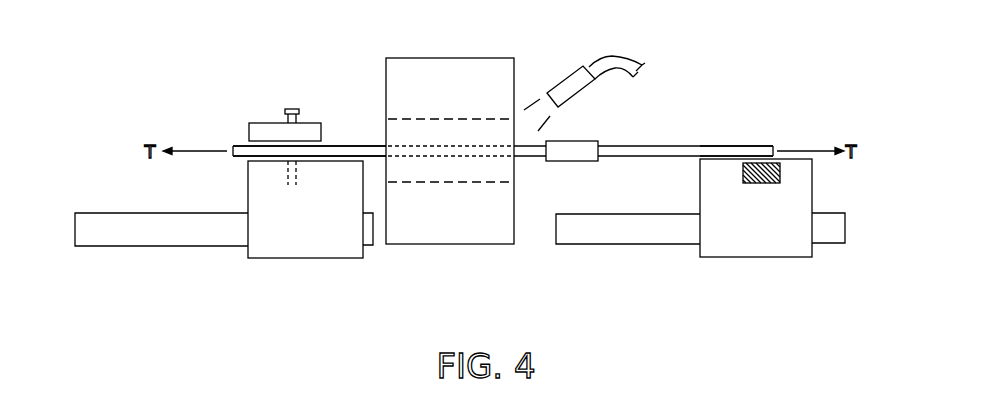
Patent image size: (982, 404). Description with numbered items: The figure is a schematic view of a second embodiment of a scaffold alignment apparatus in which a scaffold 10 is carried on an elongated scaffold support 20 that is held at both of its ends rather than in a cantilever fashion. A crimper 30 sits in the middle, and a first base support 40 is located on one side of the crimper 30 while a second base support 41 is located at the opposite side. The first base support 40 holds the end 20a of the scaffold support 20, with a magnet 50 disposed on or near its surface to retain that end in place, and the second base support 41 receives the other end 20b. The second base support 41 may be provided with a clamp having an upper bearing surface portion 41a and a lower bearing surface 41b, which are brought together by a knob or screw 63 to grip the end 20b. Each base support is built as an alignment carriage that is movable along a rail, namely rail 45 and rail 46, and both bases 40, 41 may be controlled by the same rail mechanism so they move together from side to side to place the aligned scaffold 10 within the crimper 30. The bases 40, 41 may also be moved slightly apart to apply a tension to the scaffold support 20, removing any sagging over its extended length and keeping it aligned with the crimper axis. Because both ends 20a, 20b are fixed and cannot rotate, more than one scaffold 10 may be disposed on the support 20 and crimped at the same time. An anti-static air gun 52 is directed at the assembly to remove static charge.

The scaffold 10 is at (563, 162).
The scaffold support 20 is at (662, 157).
The end of scaffold support 20a is at (737, 144).
The end of scaffold support 20b is at (235, 160).
The crimper 30 is at (470, 253).
The first base support 40 is at (750, 266).
The second base support 41 is at (278, 264).
The upper bearing surface portion 41a is at (272, 122).
The lower bearing surface 41b is at (340, 159).
The rail 45 is at (622, 238).
The rail 46 is at (134, 237).
The magnet 50 is at (782, 170).
The anti-static air gun 52 is at (582, 93).
The fastening screw 63 is at (293, 108).